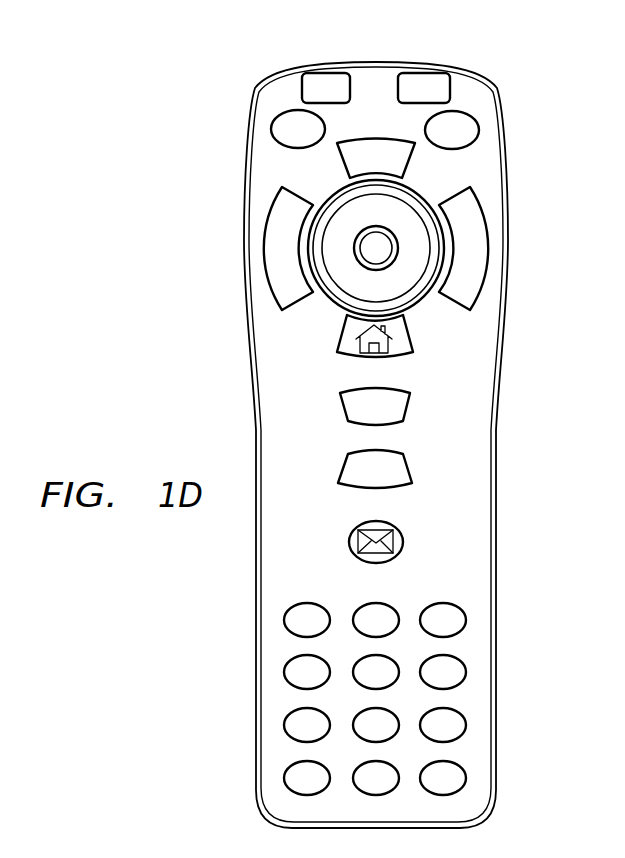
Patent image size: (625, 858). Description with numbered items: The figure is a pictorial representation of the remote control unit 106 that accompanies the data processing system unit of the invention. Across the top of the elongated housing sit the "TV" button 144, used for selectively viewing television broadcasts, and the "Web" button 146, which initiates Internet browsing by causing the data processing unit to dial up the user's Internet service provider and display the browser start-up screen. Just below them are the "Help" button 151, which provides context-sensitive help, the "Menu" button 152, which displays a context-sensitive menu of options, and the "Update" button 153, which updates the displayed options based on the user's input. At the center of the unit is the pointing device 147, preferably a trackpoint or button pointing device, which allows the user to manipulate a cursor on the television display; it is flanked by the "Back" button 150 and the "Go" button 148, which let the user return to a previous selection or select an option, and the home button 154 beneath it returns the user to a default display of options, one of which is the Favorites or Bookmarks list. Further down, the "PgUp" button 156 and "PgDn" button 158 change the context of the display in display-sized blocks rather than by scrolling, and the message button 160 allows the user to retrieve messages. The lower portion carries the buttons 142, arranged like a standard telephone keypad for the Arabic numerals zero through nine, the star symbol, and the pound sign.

The remote control unit 106 is at (496, 492).
The buttons 142 is at (508, 602).
The "TV" button 144 is at (325, 73).
The "Web" button 146 is at (422, 73).
The pointing device 147 is at (382, 242).
The "Go" button 148 is at (489, 248).
The "Back" button 150 is at (263, 248).
The "Help" button 151 is at (271, 128).
The "Menu" button 152 is at (347, 138).
The "Update" button 153 is at (480, 129).
The home button 154 is at (340, 332).
The "PgUp" button 156 is at (408, 405).
The "PgDn" button 158 is at (345, 461).
The message button 160 is at (349, 541).